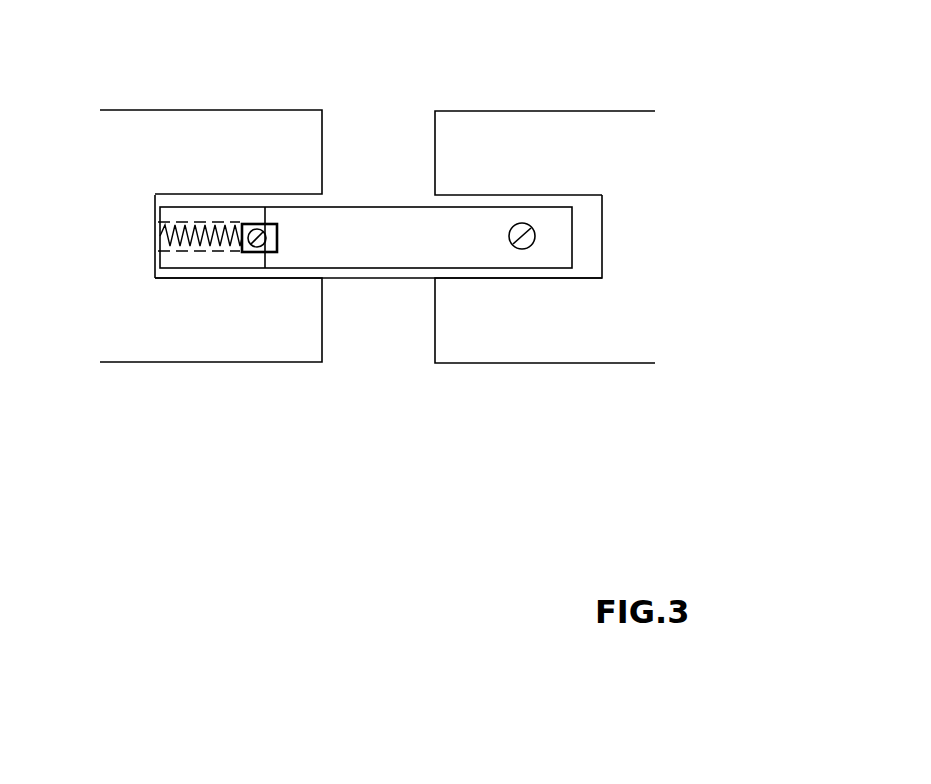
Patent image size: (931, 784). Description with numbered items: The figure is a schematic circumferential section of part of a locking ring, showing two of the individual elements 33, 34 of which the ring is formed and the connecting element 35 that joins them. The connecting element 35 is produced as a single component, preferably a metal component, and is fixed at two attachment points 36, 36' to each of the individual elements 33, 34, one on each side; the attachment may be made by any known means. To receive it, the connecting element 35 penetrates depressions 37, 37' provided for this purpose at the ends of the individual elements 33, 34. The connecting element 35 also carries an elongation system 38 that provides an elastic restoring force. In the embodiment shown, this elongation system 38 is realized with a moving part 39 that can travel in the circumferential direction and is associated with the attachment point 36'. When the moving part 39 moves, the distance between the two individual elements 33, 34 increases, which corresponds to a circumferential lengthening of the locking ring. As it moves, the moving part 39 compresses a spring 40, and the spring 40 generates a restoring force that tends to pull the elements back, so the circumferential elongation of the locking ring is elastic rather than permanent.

The individual element 33 is at (217, 157).
The individual element 34 is at (583, 138).
The connecting element 35 is at (383, 253).
The attachment point 36 is at (548, 324).
The attachment point 36' is at (240, 352).
The depression 37 is at (557, 239).
The depression 37' is at (215, 359).
The elongation system 38 is at (148, 202).
The moving part 39 is at (265, 222).
The spring 40 is at (163, 229).